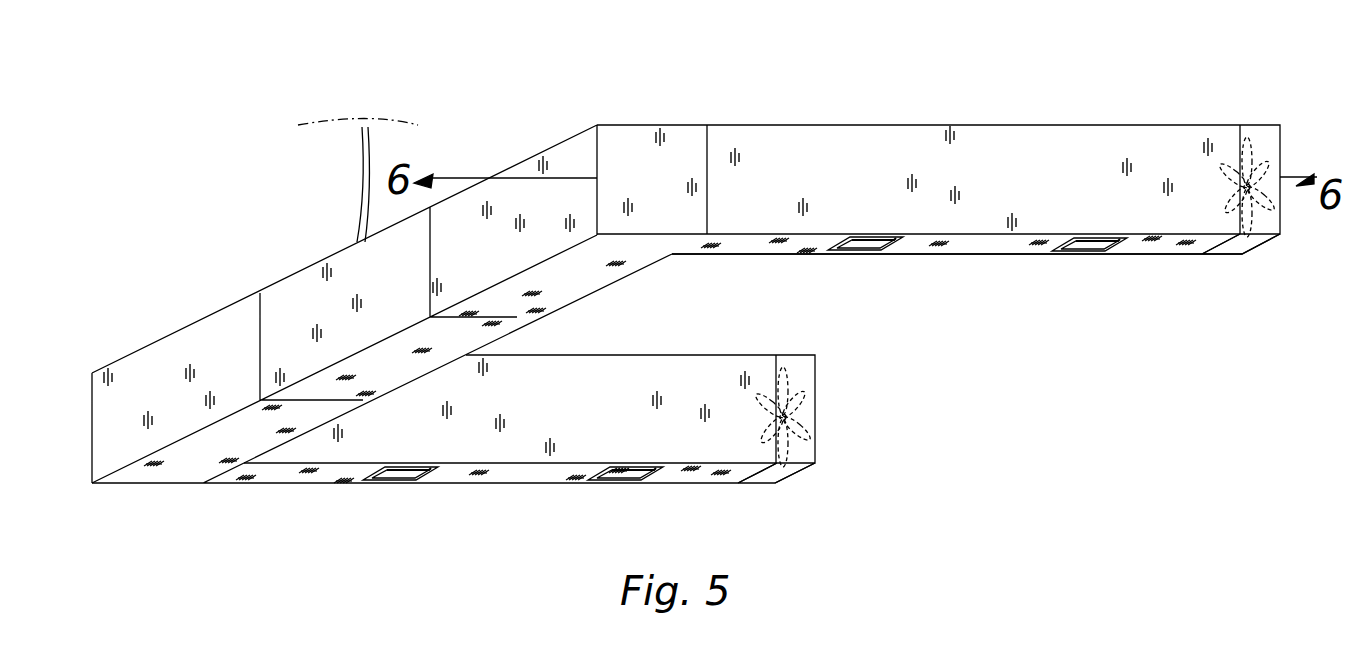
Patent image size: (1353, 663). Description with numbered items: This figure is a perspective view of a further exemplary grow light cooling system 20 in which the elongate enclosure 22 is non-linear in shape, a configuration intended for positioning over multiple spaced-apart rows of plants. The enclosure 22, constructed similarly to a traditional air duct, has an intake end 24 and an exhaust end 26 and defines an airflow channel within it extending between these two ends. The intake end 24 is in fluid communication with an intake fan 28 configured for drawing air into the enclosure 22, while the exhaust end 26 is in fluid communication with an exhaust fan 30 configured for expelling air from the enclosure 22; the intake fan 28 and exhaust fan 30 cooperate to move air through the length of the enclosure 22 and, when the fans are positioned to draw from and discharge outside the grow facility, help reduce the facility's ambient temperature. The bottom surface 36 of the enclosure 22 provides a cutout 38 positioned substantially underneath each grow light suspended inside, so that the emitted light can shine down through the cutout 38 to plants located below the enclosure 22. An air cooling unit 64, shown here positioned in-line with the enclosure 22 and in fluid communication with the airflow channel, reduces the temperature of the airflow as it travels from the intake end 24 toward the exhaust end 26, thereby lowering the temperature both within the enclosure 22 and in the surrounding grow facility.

The grow light cooling system 20 is at (938, 176).
The enclosure 22 is at (935, 115).
The intake end 24 is at (719, 491).
The exhaust end 26 is at (1187, 259).
The intake fan 28 is at (813, 412).
The exhaust fan 30 is at (1247, 248).
The bottom surface 36 is at (492, 482).
The cutout 38 is at (386, 488).
The air cooling unit 64 is at (312, 287).